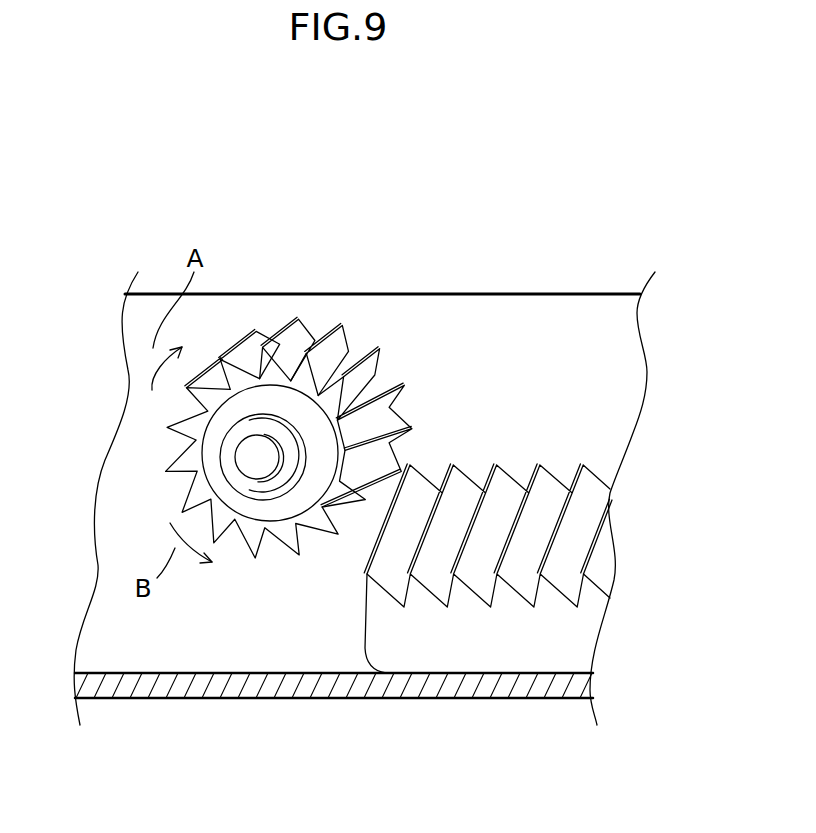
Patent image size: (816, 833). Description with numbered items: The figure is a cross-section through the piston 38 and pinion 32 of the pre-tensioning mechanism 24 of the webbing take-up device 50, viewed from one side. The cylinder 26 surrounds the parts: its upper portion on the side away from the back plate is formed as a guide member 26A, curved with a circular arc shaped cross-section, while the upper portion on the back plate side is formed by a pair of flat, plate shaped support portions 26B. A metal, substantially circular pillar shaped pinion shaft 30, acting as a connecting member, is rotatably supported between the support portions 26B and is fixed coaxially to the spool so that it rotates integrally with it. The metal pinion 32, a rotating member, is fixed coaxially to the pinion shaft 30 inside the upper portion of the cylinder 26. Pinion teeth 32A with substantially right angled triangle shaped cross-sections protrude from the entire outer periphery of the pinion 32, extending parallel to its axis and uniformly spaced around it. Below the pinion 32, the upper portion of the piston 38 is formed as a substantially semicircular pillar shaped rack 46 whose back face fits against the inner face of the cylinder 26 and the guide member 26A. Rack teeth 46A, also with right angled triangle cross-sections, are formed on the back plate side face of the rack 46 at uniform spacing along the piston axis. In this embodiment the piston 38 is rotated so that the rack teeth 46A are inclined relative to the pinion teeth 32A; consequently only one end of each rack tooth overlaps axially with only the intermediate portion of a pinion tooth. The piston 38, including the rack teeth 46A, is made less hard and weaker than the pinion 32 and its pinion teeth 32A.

The pre-tensioning mechanism 24 is at (285, 208).
The webbing take-up device 50 is at (389, 457).
The cylinder 26 is at (562, 292).
The guide member 26A is at (428, 700).
The support portions 26B is at (460, 330).
The pinion shaft 30 is at (260, 467).
The pinion 32 is at (289, 320).
The pinion teeth 32A is at (350, 540).
The rack 46 is at (372, 652).
The piston 38 is at (488, 535).
The rack teeth 46A is at (422, 468).